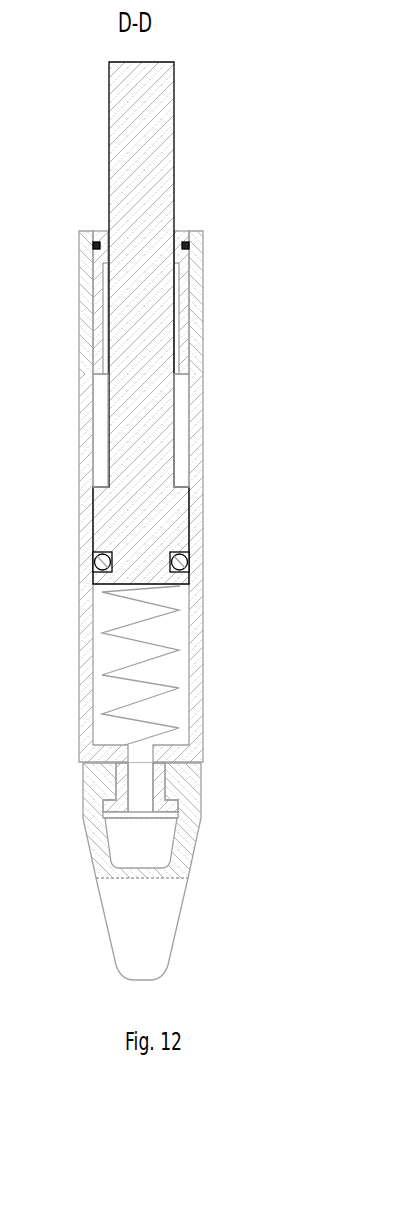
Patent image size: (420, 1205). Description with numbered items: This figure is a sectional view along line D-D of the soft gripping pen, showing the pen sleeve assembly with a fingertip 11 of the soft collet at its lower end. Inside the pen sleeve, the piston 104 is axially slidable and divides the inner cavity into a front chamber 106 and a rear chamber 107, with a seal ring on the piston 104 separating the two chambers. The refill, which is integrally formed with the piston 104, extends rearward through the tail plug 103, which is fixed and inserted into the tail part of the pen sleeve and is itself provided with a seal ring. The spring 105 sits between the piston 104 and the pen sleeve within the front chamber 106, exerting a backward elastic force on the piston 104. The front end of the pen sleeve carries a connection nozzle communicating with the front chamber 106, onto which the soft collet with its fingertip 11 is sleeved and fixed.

The fingertips 11 is at (116, 912).
The tail plug 103 is at (185, 307).
The piston 104 is at (172, 537).
The spring 105 is at (158, 656).
The front chamber 106 is at (182, 678).
The rear chamber 107 is at (183, 435).